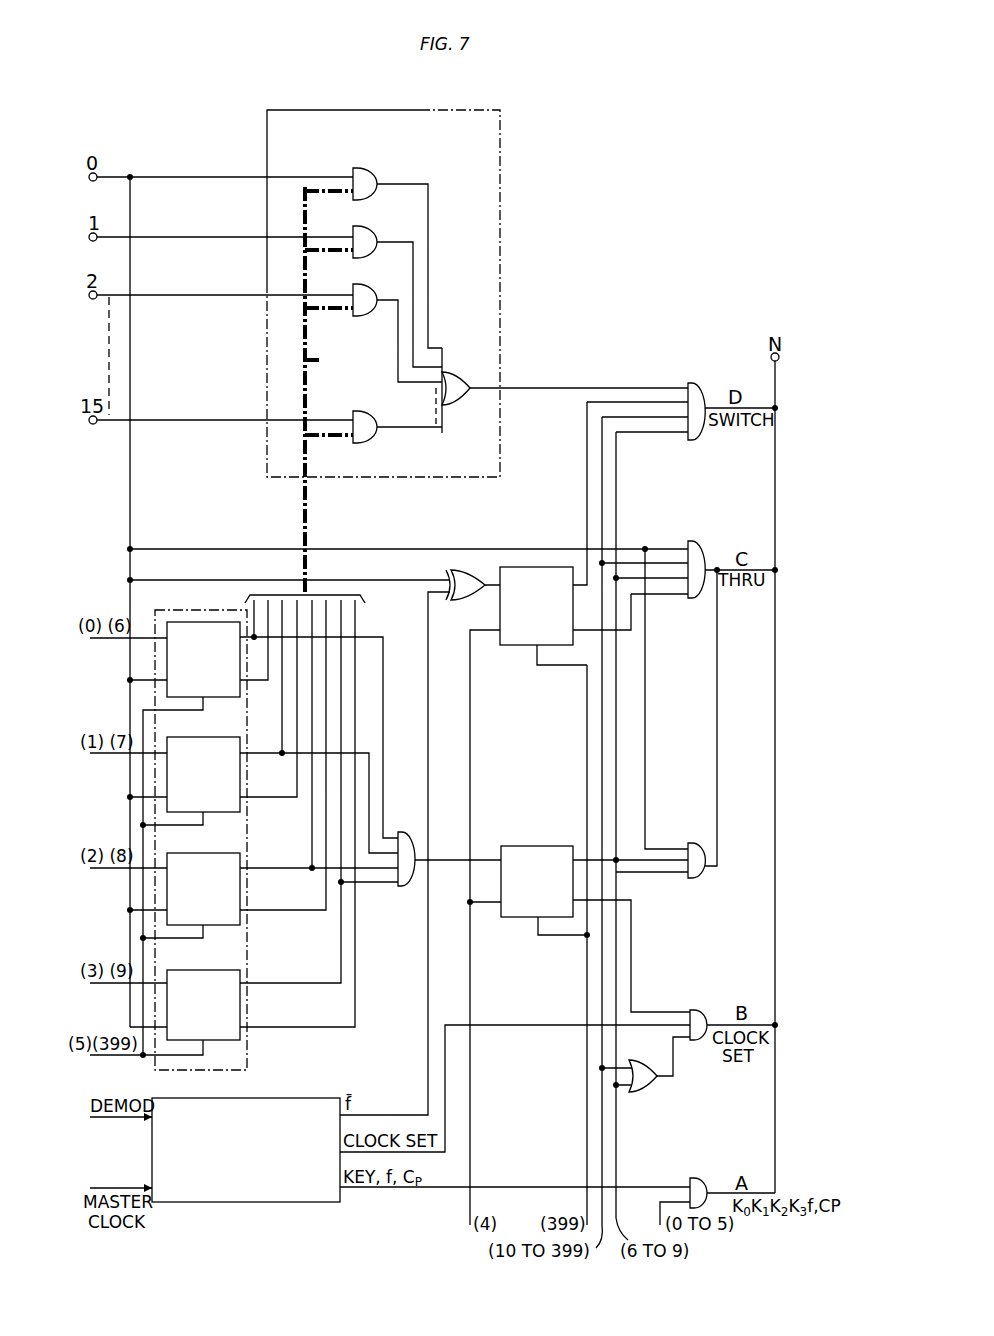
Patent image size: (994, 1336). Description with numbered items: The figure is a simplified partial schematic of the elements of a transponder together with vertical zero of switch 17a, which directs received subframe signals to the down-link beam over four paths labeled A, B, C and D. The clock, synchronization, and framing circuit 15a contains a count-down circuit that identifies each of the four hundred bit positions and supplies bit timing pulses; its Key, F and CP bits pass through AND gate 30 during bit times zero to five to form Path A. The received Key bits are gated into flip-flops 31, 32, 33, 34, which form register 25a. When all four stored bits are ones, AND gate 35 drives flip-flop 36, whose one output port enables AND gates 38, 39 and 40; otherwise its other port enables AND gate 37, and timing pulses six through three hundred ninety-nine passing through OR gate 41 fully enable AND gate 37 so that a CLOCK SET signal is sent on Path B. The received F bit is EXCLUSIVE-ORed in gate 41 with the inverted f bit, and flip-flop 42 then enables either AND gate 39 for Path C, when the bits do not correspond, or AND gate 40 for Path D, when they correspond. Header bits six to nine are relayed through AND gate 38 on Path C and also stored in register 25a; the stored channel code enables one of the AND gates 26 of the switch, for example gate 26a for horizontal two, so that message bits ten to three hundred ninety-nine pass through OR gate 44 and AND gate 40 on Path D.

The switch 17a is at (500, 143).
The AND gates 26 is at (366, 178).
The AND gate 26a is at (356, 318).
The OR gate 44 is at (455, 378).
The AND gate 40 is at (698, 390).
The AND gate 39 is at (697, 550).
The AND gate 38 is at (693, 845).
The AND gate 37 is at (693, 1010).
The flip-flop 36 is at (539, 846).
The AND gate 35 is at (409, 834).
The flip-flop 34 is at (200, 970).
The flip-flop 33 is at (234, 925).
The flip-flop 32 is at (234, 812).
The flip-flop 31 is at (234, 698).
The AND gate 30 is at (693, 1178).
The register 25a is at (168, 610).
The clock, synchronization, and framing circuit 15a is at (310, 1092).
The OR gate 41 is at (468, 600).
The flip-flop 42 is at (501, 646).